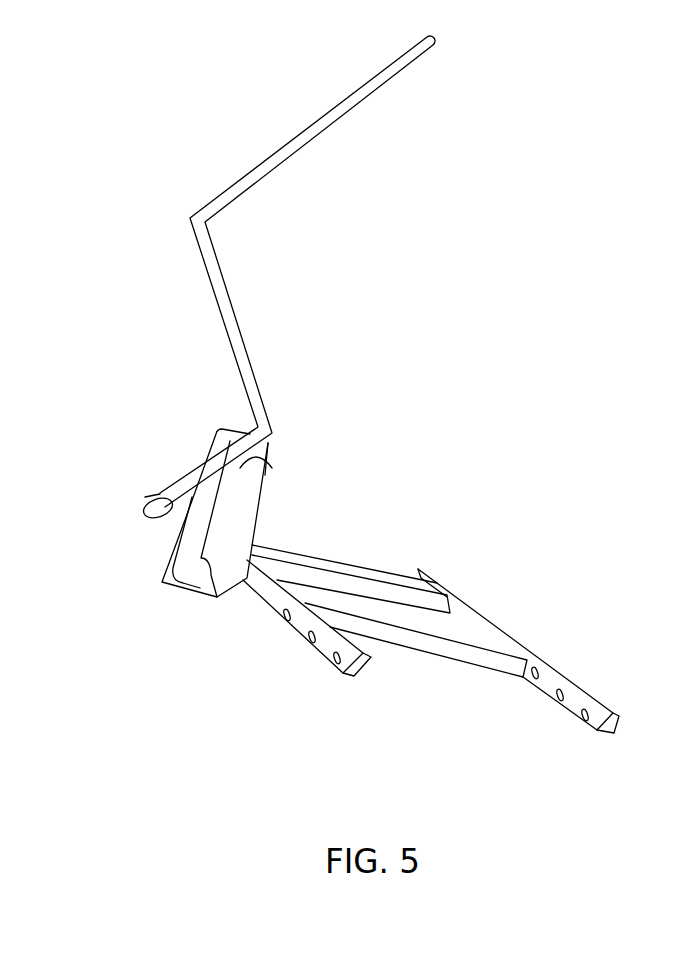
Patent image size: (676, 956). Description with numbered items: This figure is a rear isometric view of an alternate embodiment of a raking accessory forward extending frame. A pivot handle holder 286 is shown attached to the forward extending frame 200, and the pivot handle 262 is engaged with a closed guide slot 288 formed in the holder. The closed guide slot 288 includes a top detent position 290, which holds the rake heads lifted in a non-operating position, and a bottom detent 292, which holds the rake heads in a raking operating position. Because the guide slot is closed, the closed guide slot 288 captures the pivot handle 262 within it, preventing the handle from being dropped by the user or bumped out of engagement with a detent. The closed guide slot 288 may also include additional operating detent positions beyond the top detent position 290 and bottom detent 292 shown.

The forward extending frame 200 is at (507, 618).
The pivot handle 262 is at (238, 318).
The pivot handle holder 286 is at (258, 526).
The closed guide slot 288 is at (162, 533).
The top detent position 290 is at (266, 469).
The bottom detent 292 is at (197, 590).